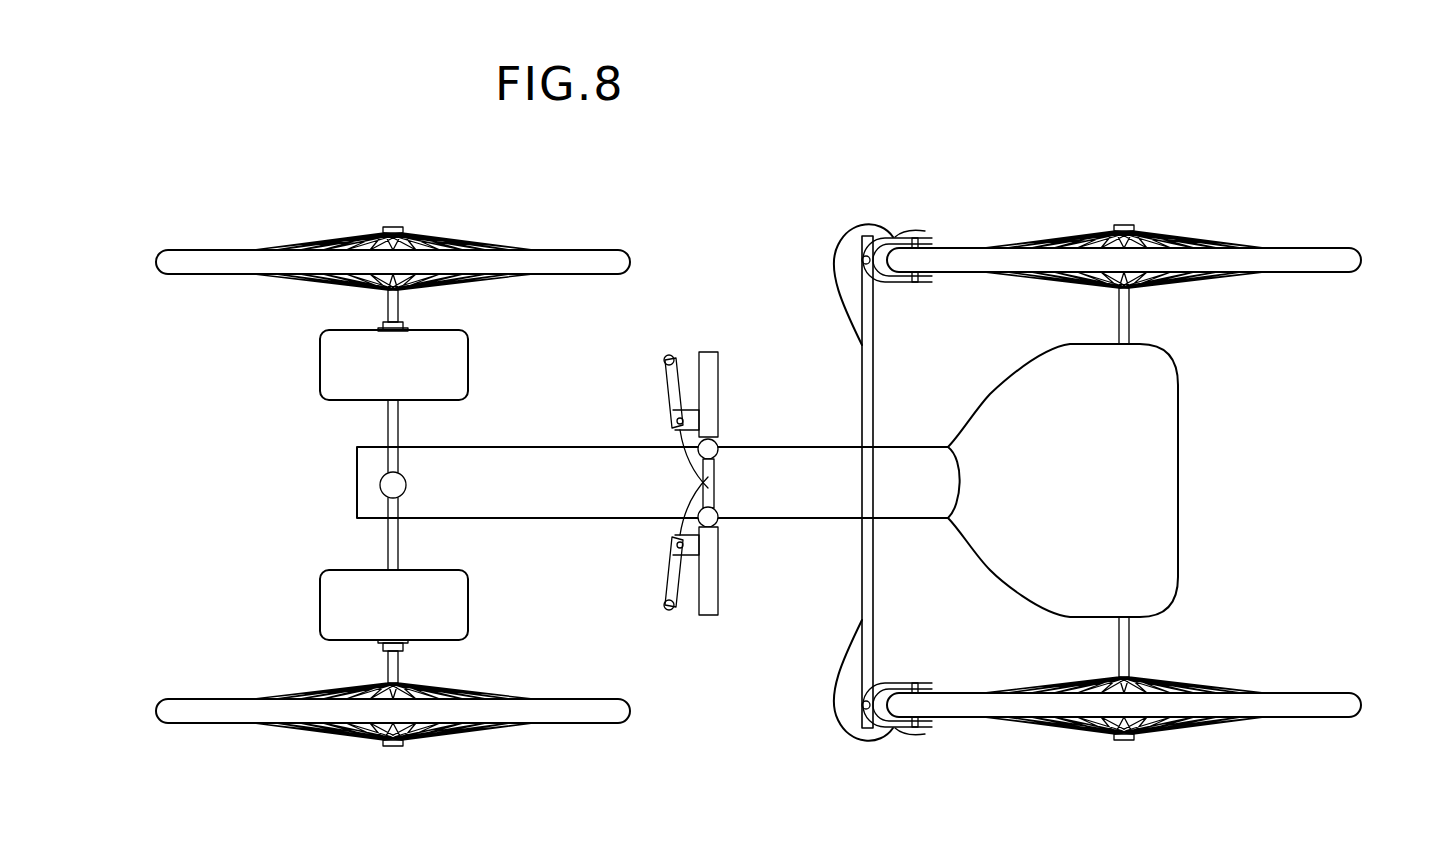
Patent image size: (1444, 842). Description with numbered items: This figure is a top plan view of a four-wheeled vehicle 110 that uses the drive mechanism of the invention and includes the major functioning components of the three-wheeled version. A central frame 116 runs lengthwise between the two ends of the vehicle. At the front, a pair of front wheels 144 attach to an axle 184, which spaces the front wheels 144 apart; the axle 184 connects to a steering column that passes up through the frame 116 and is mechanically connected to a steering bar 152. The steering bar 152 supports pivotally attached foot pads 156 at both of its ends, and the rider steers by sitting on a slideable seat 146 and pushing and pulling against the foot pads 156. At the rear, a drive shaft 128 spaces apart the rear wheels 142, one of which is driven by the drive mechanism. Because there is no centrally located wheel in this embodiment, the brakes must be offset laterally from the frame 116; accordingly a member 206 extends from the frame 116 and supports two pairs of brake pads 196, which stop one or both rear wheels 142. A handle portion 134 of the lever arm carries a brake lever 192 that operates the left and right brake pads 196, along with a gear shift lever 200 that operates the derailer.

The four-wheeled vehicle 110 is at (992, 153).
The frame 116 is at (818, 497).
The drive shaft 128 is at (1130, 312).
The handle portion 134 is at (720, 362).
The rear wheel 142 is at (1336, 247).
The front wheel 144 is at (173, 250).
The slideable seat 146 is at (1178, 498).
The steering bar 152 is at (398, 422).
The foot pads 156 is at (468, 355).
The axle 184 is at (388, 302).
The brake lever 192 is at (660, 368).
The brake pads 196 is at (905, 283).
The steering lever 200 is at (662, 600).
The member 206 is at (862, 575).